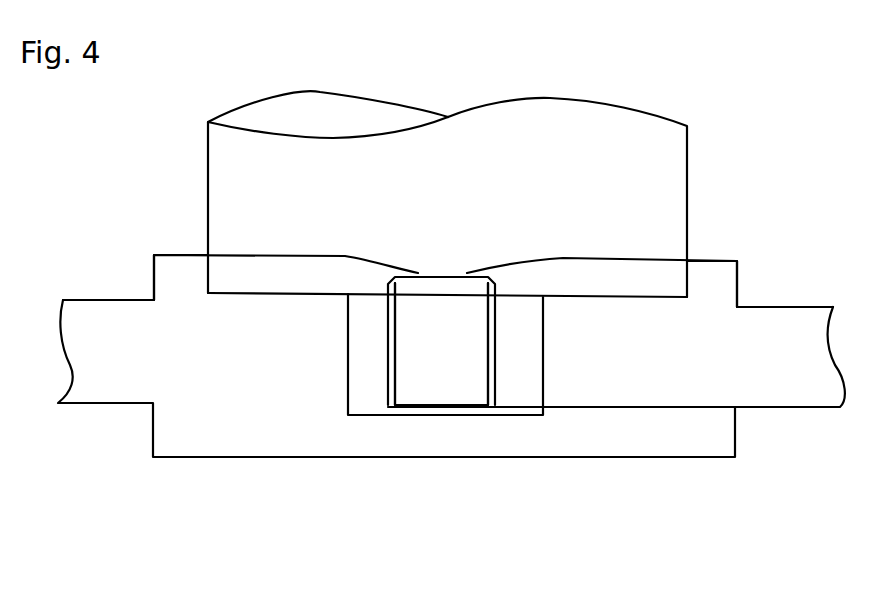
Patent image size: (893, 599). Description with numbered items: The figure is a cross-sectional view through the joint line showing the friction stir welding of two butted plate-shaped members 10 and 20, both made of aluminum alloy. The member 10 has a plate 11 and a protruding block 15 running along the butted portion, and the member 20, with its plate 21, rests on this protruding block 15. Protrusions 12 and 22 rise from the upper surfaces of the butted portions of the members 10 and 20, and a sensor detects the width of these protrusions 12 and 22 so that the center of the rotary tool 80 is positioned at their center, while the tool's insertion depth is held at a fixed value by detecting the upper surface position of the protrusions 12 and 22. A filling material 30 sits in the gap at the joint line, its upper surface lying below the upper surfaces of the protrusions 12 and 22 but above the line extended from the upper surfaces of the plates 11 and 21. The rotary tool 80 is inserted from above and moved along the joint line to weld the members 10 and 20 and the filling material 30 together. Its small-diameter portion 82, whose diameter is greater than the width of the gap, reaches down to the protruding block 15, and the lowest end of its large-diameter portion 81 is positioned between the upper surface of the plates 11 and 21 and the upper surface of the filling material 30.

The plate-shaped member 10 is at (132, 455).
The plate 11 is at (97, 322).
The protrusion 12 is at (175, 276).
The protruding block 15 is at (518, 450).
The plate-shaped member 20 is at (766, 432).
The plate 21 is at (785, 325).
The protrusion 22 is at (715, 280).
The filling material 30 is at (425, 393).
The rotary tool 80 is at (658, 98).
The large-diameter portion 81 is at (676, 164).
The small-diameter portion 82 is at (545, 345).